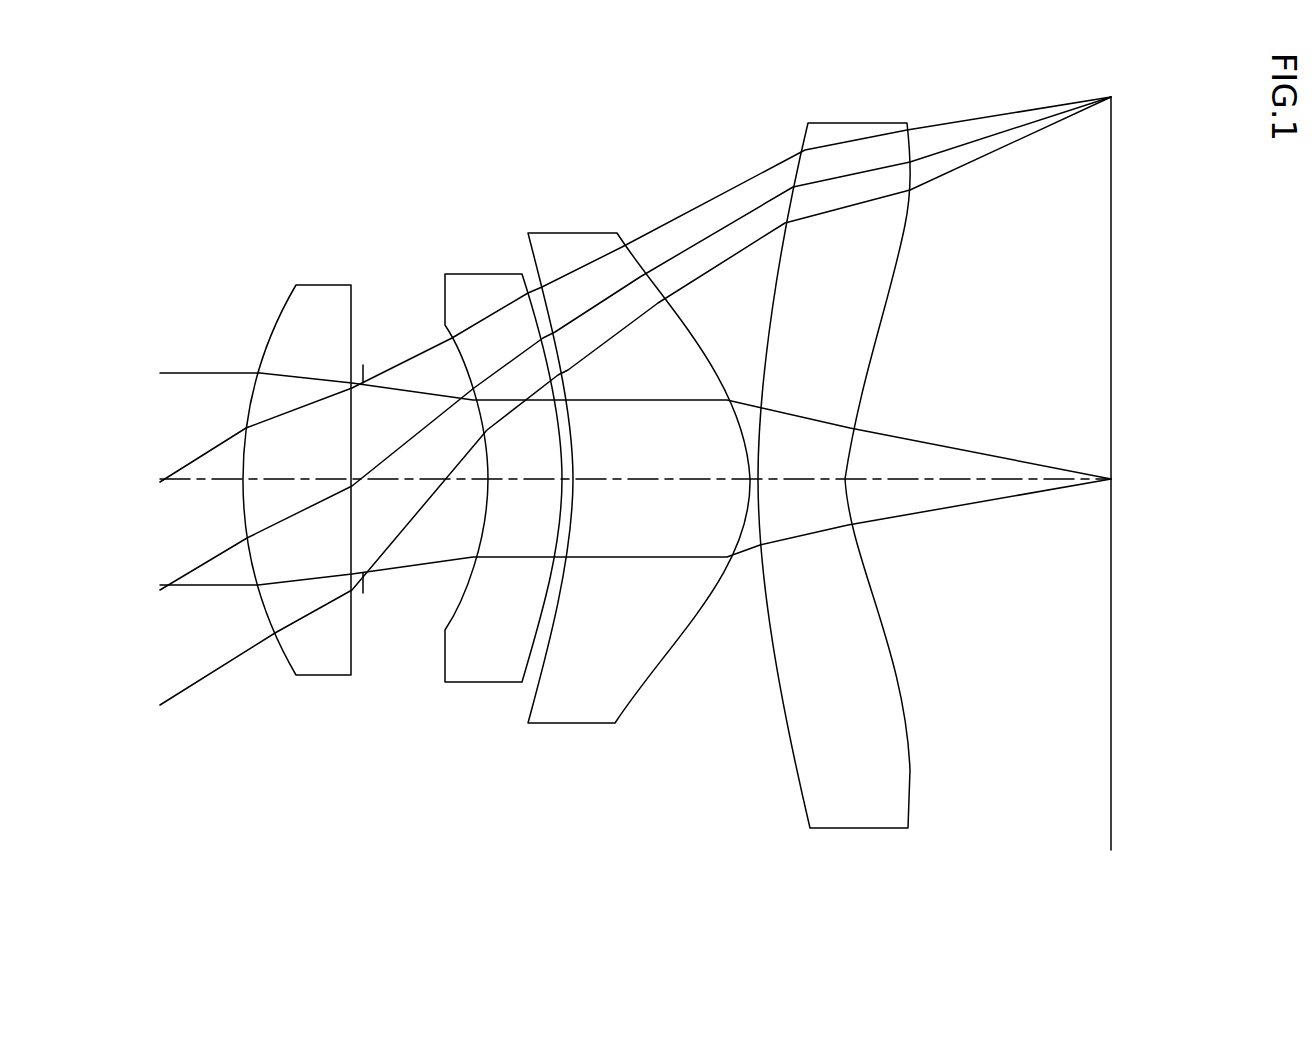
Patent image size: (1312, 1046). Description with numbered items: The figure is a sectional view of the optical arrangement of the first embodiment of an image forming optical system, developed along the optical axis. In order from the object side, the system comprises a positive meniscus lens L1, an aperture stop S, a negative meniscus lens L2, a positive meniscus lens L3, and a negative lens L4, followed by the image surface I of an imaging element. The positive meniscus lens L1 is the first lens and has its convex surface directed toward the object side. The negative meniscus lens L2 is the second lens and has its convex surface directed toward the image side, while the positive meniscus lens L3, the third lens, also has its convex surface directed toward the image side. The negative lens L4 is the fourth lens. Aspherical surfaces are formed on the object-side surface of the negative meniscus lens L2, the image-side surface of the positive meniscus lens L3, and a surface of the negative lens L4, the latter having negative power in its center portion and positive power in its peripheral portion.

The positive meniscus lens L1 is at (290, 298).
The negative meniscus lens L2 is at (463, 273).
The positive meniscus lens L3 is at (572, 232).
The negative lens L4 is at (852, 123).
The aperture stop S is at (365, 366).
The image surface I is at (1113, 220).